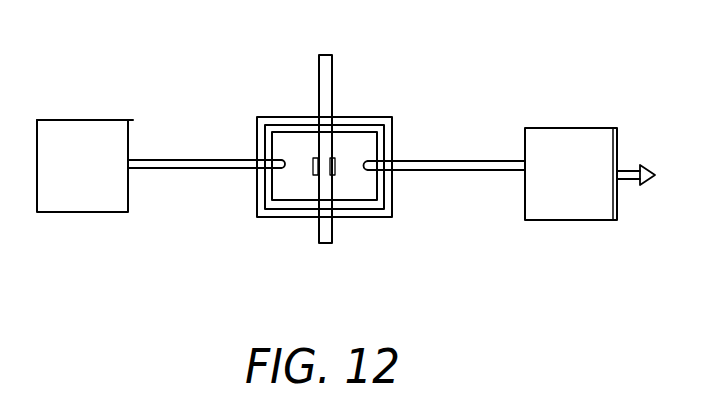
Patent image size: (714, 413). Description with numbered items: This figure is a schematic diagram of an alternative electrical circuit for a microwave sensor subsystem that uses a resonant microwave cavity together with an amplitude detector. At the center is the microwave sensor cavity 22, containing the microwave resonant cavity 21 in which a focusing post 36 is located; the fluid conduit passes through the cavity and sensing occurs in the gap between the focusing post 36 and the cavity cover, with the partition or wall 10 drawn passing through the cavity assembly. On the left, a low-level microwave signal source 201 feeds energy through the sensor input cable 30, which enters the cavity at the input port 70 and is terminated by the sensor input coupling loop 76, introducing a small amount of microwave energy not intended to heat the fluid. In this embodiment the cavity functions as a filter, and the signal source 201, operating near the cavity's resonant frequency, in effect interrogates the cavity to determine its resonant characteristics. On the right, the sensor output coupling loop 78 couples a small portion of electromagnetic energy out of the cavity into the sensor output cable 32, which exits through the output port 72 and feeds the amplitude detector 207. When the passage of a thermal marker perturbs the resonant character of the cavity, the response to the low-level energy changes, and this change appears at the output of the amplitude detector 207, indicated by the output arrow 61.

The low-level microwave signal source 201 is at (90, 120).
The amplitude detector 207 is at (578, 128).
The sensor input cable 30 is at (188, 170).
The sensor output cable 32 is at (487, 173).
The microwave sensor cavity 22 is at (302, 117).
The microwave resonant cavity 21 is at (292, 190).
The partition wall 10 is at (335, 72).
The focusing post 36 is at (335, 172).
The input port 70 is at (257, 165).
The output port 72 is at (396, 162).
The sensor input coupling loop 76 is at (278, 158).
The sensor output coupling loop 78 is at (367, 163).
The output direction arrow 61 is at (632, 180).